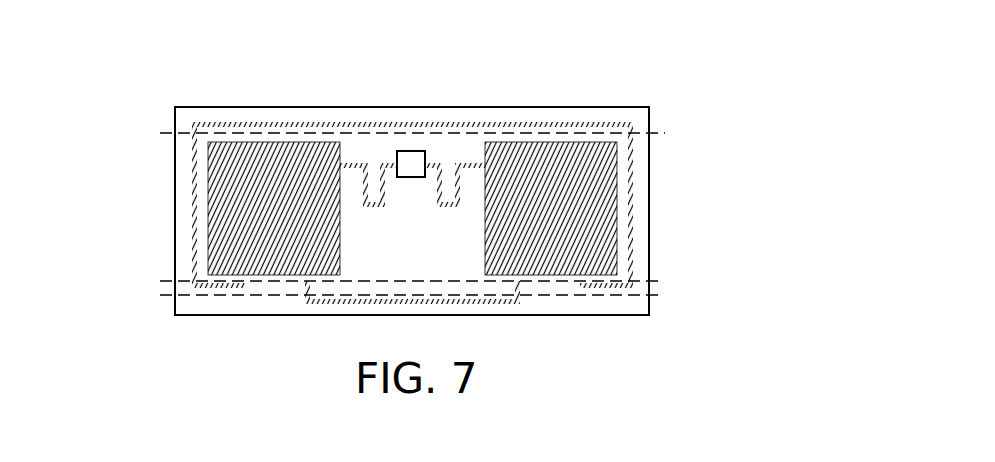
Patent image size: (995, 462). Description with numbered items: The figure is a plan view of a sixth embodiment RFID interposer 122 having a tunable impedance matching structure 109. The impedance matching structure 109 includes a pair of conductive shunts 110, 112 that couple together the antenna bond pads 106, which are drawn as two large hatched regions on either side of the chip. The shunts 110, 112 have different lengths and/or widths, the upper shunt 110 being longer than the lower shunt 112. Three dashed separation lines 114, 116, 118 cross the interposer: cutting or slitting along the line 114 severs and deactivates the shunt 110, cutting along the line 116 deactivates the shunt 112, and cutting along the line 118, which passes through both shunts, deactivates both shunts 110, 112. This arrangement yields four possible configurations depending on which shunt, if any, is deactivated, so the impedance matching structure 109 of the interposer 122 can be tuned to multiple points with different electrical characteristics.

The RFID tag assembly 122 is at (142, 107).
The tunable impedance matching structure 109 is at (288, 103).
The conductive shunt 110 is at (416, 123).
The antenna bond pads 106 is at (225, 212).
The conductive shunt 112 is at (495, 303).
The separation line 114 is at (666, 131).
The separation line 118 is at (664, 280).
The separation line 116 is at (664, 296).